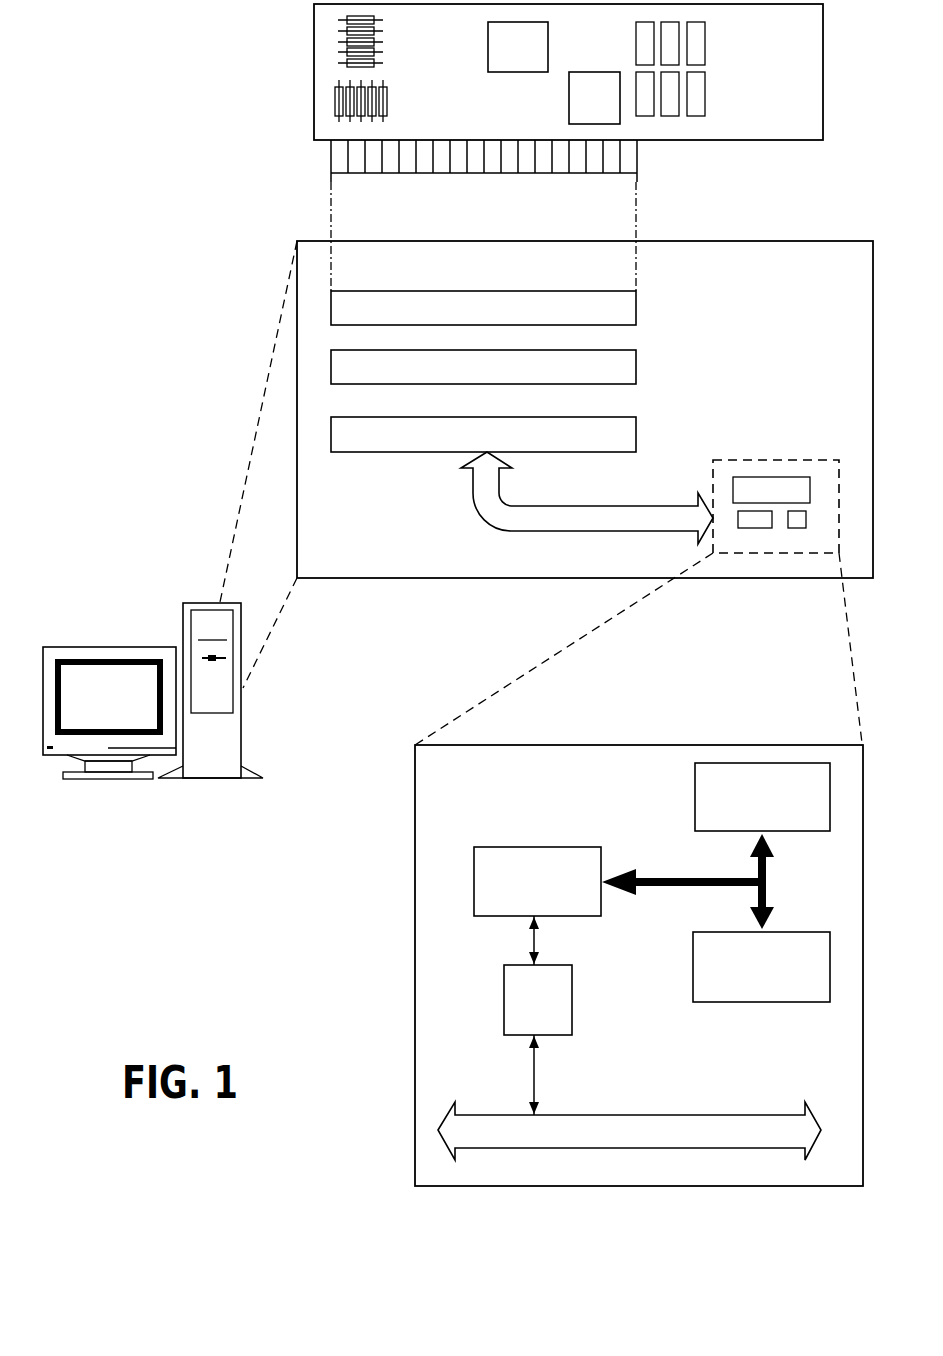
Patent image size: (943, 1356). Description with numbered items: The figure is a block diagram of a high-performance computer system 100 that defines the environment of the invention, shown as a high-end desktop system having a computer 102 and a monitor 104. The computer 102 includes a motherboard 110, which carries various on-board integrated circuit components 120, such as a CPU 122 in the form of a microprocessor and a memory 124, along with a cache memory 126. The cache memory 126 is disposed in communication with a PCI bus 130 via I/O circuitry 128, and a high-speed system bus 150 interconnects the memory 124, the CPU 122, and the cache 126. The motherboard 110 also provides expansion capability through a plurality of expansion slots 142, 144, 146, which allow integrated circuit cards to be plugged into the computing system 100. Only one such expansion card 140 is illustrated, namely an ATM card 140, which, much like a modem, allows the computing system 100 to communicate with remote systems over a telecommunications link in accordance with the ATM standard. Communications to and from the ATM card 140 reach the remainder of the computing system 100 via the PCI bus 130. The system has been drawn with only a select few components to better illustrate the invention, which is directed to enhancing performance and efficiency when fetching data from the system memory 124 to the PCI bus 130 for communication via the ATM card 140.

The computer system 100 is at (120, 548).
The computer 102 is at (243, 690).
The monitor 104 is at (108, 782).
The motherboard 110 is at (728, 241).
The on-board integrated circuit components 120 is at (733, 460).
The CPU 122 is at (718, 1002).
The memory 124 is at (695, 796).
The cache memory 126 is at (508, 847).
The I/O circuitry 128 is at (550, 965).
The PCI bus 130 is at (527, 506).
The ATM card 140 is at (720, 142).
The expansion slot 142 is at (483, 308).
The expansion slot 144 is at (483, 367).
The expansion slot 146 is at (483, 434).
The system bus 150 is at (660, 878).